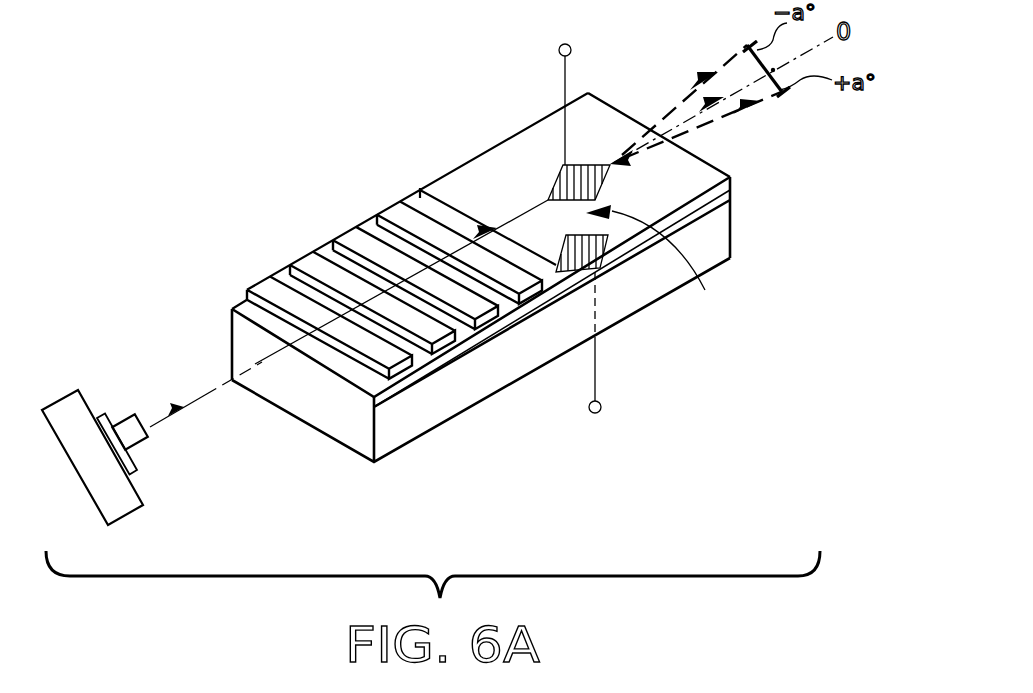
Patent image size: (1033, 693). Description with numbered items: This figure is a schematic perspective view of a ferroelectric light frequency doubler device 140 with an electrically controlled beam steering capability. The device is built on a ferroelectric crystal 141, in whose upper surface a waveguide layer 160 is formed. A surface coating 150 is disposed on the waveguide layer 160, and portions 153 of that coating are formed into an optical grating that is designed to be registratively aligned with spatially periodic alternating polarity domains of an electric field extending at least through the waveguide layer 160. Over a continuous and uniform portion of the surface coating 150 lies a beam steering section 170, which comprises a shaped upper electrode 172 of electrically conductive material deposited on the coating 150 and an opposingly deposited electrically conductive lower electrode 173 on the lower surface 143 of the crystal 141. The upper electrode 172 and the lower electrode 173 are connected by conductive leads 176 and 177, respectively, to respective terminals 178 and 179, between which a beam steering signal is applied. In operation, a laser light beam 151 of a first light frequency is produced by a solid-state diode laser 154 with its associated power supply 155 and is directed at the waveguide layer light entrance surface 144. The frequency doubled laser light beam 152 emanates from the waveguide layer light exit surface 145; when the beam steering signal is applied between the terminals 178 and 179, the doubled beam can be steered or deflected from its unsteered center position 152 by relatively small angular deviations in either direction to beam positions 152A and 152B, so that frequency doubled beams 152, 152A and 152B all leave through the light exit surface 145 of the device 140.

The ferroelectric light frequency doubler device 140 is at (246, 184).
The ferroelectric crystal 141 is at (374, 462).
The lower surface 143 is at (478, 402).
The waveguide layer light entrance surface 144 is at (232, 312).
The waveguide layer light exit surface 145 is at (733, 193).
The surface coating 150 is at (462, 180).
The laser light beam 151 is at (217, 388).
The frequency doubled laser light beam 152 is at (698, 114).
The beam position 152A is at (782, 98).
The beam position 152B is at (733, 62).
The portions of surface coating formed into an optical grating 153 is at (388, 212).
The solid-state diode laser 154 is at (117, 428).
The power supply 155 is at (62, 400).
The waveguide layer 160 is at (403, 388).
The beam steering section 170 is at (670, 257).
The upper electrode 172 is at (556, 180).
The lower electrode 173 is at (622, 278).
The conductive lead 176 is at (565, 98).
The conductive lead 177 is at (597, 372).
The terminal 178 is at (559, 48).
The terminal 179 is at (601, 408).